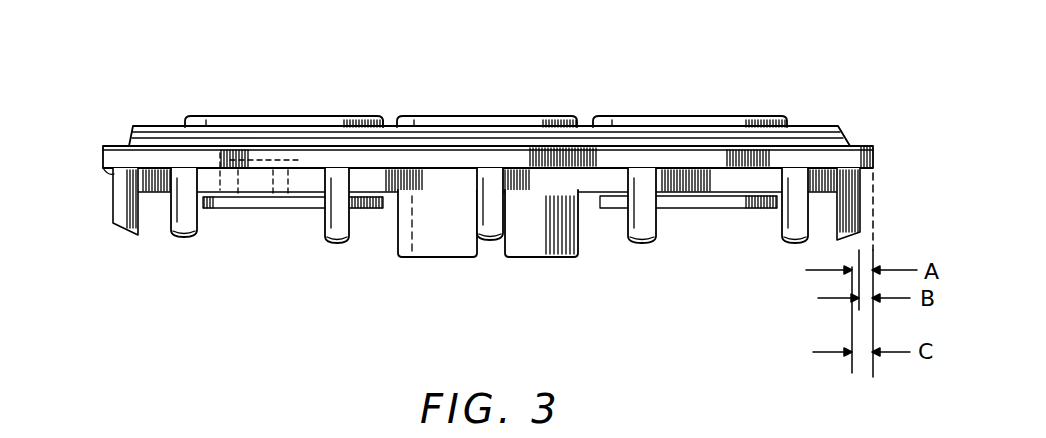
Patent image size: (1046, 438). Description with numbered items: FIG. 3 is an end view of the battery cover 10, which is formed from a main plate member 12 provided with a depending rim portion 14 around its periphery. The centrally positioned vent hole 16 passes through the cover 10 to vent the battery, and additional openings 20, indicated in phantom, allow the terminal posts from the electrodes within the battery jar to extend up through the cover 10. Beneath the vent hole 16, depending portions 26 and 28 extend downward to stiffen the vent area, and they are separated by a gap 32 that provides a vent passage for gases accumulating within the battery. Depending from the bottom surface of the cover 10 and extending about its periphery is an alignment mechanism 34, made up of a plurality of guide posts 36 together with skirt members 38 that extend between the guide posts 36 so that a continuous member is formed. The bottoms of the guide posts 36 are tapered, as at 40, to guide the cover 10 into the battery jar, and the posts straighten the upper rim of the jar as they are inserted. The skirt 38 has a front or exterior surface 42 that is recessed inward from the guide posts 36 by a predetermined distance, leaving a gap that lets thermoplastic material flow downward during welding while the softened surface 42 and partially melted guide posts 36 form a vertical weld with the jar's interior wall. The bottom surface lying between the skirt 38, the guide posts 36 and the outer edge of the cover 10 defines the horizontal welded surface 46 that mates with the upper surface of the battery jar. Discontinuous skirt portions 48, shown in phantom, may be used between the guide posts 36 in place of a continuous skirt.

The cover 10 is at (479, 167).
The main plate member 12 is at (814, 126).
The depending rim portion 14 is at (862, 135).
The vent hole 16 is at (429, 118).
The additional openings 20 is at (337, 71).
The depending portion 26 is at (585, 240).
The depending portion 28 is at (400, 243).
The gap 32 is at (488, 248).
The alignment mechanism 34 is at (824, 203).
The guide posts 36 is at (658, 225).
The skirt member 38 is at (725, 200).
The tapered bottom 40 is at (125, 233).
The front surface 42 is at (347, 200).
The horizontal welded surface 46 is at (110, 176).
The discontinuous skirt portions 48 is at (277, 200).